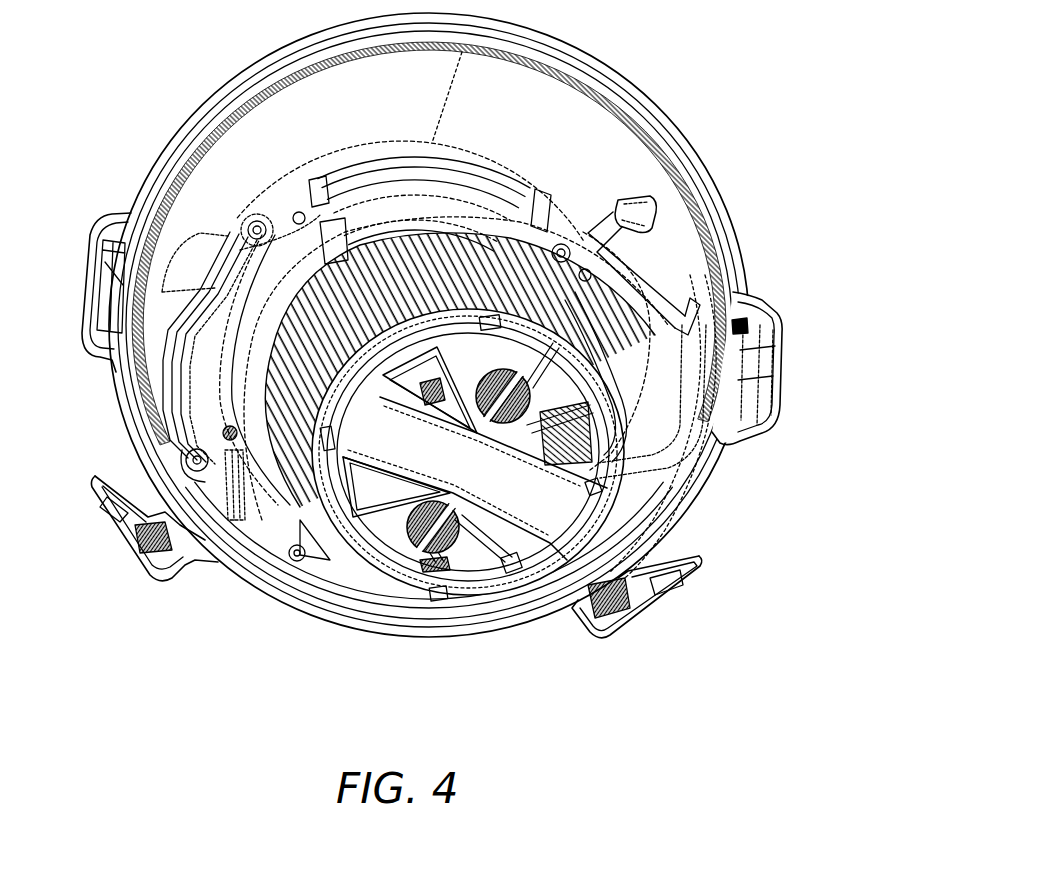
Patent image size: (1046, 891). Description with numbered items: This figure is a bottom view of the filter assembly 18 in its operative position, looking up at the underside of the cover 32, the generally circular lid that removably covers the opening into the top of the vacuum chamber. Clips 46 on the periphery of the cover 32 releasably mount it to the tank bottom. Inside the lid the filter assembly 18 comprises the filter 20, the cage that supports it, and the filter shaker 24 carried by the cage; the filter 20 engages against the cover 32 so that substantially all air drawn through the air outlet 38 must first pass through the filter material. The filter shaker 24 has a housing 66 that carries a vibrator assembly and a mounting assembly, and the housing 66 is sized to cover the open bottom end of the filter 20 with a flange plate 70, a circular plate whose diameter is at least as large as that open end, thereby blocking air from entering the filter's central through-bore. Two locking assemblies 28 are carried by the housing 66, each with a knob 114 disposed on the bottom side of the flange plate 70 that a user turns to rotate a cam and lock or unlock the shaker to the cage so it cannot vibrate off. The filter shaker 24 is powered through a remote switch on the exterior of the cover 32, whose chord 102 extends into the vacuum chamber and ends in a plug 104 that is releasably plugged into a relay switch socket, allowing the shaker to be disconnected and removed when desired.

The filter assembly 18 is at (486, 641).
The filter 20 is at (497, 240).
The filter shaker 24 is at (400, 565).
The locking assembly 28 is at (437, 552).
The cover 32 is at (590, 56).
The air outlet 38 is at (603, 300).
The clips 46 is at (120, 272).
The housing 66 is at (673, 530).
The flange plate 70 is at (320, 565).
The chord 102 is at (663, 290).
The plug 104 is at (592, 464).
The knob 114 is at (490, 378).